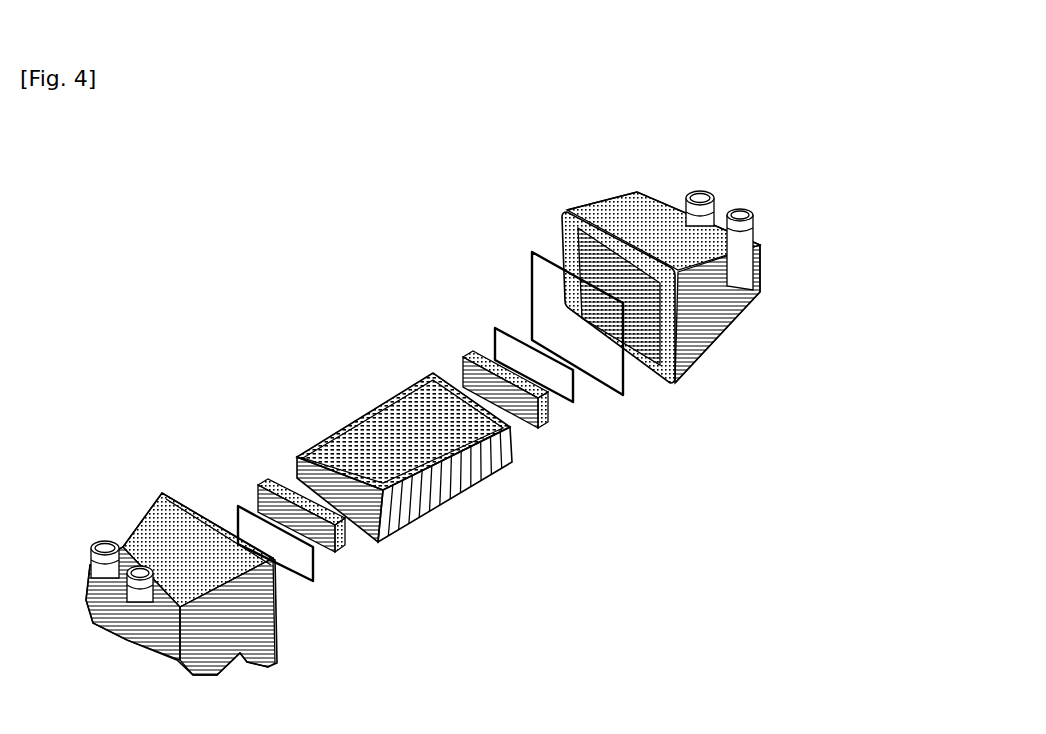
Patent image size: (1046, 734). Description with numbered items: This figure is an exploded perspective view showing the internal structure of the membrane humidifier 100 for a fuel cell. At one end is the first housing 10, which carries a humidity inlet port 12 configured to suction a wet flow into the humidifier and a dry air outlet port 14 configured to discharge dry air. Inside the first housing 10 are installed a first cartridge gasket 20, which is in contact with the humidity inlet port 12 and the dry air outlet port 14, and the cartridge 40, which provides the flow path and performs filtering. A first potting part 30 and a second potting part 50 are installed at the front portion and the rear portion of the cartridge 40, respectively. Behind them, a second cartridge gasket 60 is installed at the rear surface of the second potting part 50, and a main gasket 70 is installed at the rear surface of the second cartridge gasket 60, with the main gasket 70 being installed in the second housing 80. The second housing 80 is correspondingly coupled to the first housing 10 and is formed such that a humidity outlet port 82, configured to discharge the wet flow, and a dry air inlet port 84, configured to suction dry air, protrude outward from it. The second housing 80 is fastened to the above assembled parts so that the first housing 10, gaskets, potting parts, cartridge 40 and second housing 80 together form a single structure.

The membrane humidifier 100 is at (550, 655).
The first housing 10 is at (167, 498).
The humidity inlet port 12 is at (120, 593).
The dry air outlet port 14 is at (93, 567).
The first cartridge gasket 20 is at (237, 505).
The first potting part 30 is at (267, 482).
The cartridge 40 is at (381, 408).
The second potting part 50 is at (473, 357).
The second cartridge gasket 60 is at (500, 328).
The main gasket 70 is at (531, 253).
The second housing 80 is at (621, 221).
The humidity outlet port 82 is at (757, 217).
The dry air inlet port 84 is at (715, 198).